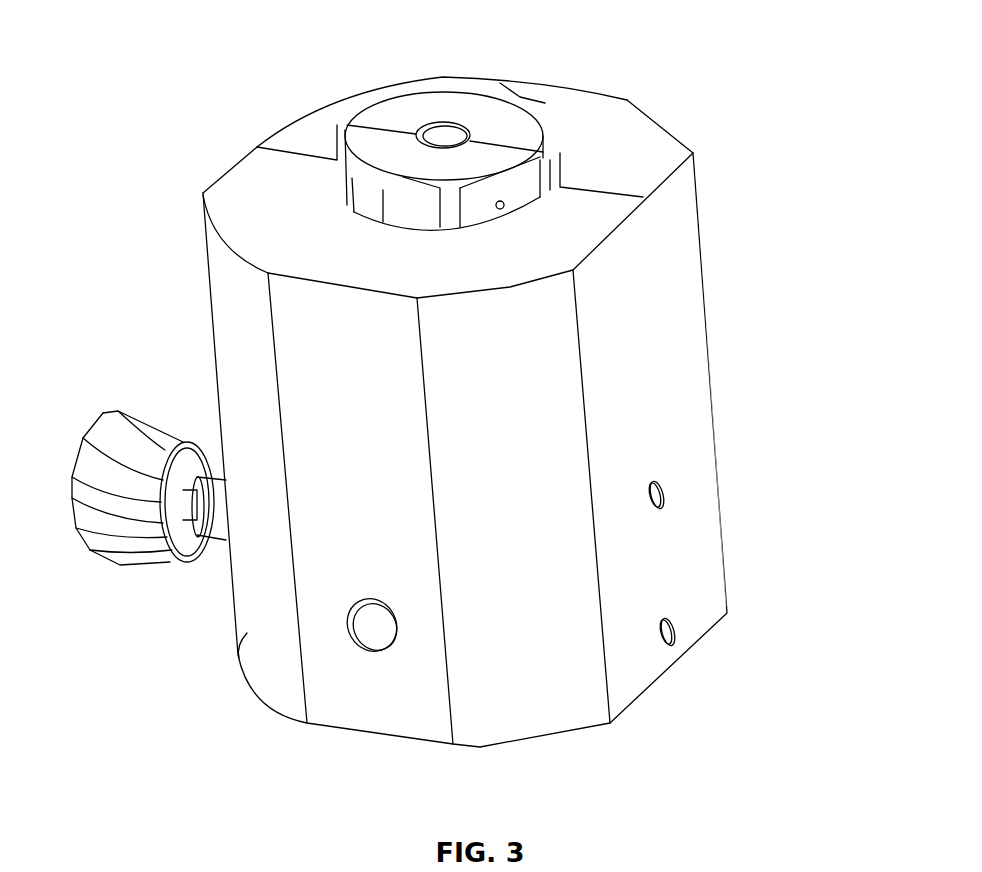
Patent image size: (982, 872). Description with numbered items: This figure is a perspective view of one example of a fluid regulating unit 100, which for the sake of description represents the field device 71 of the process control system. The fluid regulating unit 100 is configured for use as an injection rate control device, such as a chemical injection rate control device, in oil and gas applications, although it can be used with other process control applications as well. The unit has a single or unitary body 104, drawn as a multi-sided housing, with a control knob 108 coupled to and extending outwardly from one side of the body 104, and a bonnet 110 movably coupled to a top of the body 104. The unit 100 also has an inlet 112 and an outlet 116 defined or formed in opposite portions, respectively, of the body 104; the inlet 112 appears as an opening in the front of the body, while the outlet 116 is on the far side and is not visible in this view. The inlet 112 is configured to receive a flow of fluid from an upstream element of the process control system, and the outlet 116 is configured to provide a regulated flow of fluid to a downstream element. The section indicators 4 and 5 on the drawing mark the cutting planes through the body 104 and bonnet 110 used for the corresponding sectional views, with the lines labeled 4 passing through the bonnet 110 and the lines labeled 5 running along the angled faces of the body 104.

The field device 71 is at (700, 70).
The fluid regulating unit 100 is at (434, 395).
The body 104 is at (673, 382).
The control knob 108 is at (128, 560).
The bonnet 110 is at (412, 115).
The inlet 112 is at (373, 650).
The outlet 116 is at (726, 470).
The section line 4- 4 is at (453, 68).
The section line 5- 5 is at (257, 147).